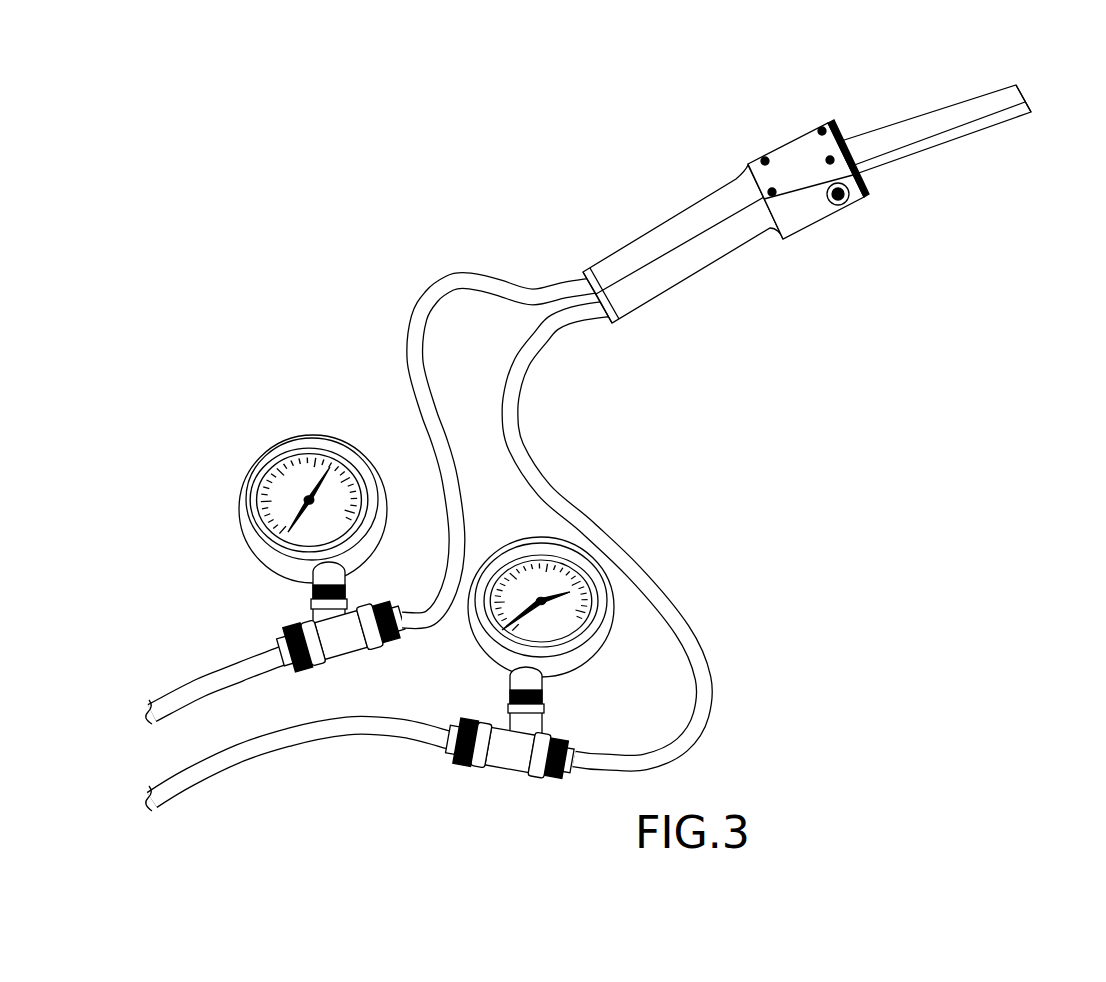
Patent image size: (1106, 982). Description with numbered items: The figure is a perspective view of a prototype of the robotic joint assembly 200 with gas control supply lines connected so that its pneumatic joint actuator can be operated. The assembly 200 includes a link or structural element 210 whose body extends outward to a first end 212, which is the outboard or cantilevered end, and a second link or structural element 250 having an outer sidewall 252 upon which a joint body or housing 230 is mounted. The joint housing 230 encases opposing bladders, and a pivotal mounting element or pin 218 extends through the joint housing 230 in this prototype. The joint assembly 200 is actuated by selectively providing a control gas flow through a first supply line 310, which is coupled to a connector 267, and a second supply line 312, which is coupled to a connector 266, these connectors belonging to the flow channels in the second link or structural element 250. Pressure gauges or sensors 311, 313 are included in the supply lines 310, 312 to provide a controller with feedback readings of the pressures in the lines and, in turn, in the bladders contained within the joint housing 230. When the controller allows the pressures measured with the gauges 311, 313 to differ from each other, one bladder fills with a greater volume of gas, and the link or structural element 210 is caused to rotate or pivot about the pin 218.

The robotic joint assembly 200 is at (915, 172).
The link 210 is at (935, 148).
The first end 212 is at (1030, 118).
The pivotal mounting element 218 is at (845, 205).
The joint housing 230 is at (807, 104).
The second link 250 is at (631, 274).
The outer sidewall 252 is at (694, 220).
The connector 266 is at (601, 340).
The connector 267 is at (553, 263).
The first supply line 310 is at (408, 345).
The pressure gauge 311 is at (259, 448).
The second supply line 312 is at (523, 408).
The pressure gauge 313 is at (598, 658).